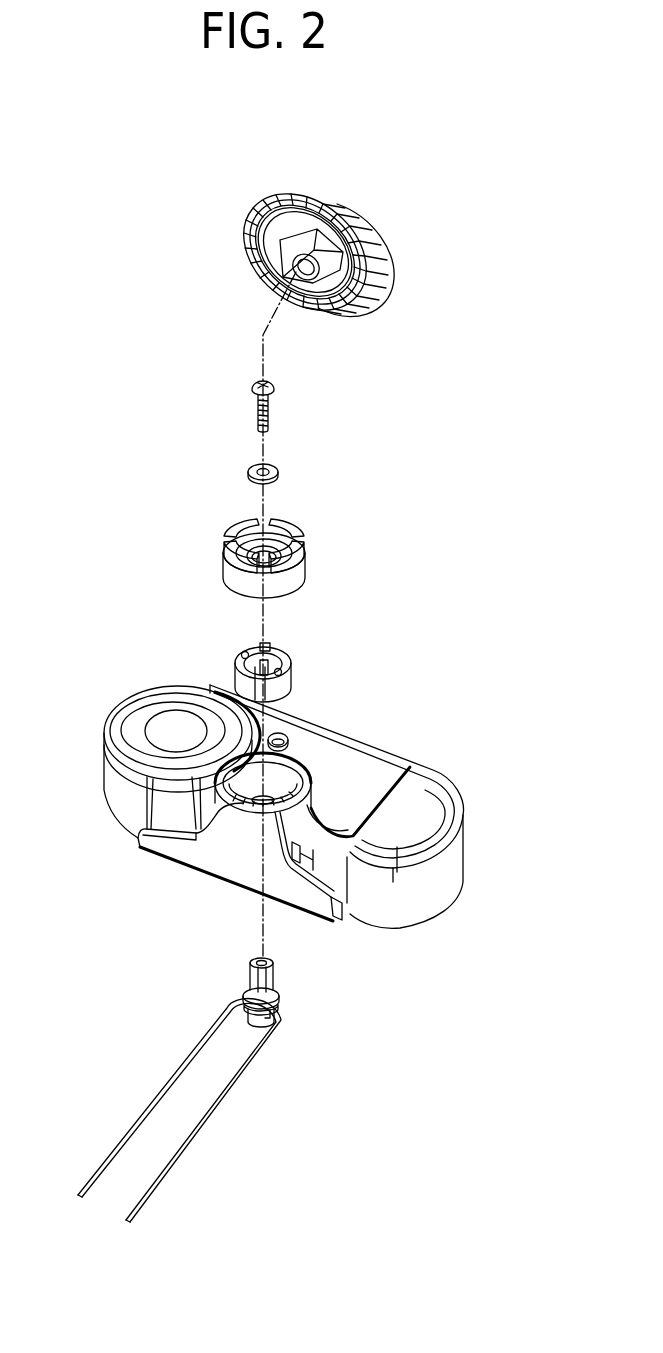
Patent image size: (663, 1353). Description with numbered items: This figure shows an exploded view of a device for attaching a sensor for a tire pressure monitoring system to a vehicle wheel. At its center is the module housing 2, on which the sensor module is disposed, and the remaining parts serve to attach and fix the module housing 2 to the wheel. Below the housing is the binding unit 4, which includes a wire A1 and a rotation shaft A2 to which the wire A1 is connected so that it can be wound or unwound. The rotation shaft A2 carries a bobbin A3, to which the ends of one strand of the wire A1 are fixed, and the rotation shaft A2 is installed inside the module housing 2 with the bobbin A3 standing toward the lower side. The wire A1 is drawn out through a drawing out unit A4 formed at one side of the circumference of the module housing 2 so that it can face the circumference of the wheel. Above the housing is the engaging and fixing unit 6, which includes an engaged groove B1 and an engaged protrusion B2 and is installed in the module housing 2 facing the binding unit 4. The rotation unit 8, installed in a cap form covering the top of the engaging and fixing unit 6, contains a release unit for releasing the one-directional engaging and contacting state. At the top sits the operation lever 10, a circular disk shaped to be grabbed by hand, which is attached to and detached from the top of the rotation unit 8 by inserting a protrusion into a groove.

The operation lever 10 is at (318, 198).
The rotation unit 8 is at (304, 523).
The engaging and fixing unit 6 is at (305, 656).
The engaged protrusion B2 is at (275, 648).
The engaged groove B1 is at (290, 762).
The module housing 2 is at (298, 785).
The drawing out unit A4 is at (229, 855).
The binding unit 4 is at (211, 1090).
The wire A1 is at (242, 1085).
The rotation shaft A2 is at (266, 982).
The bobbin A3 is at (275, 1012).